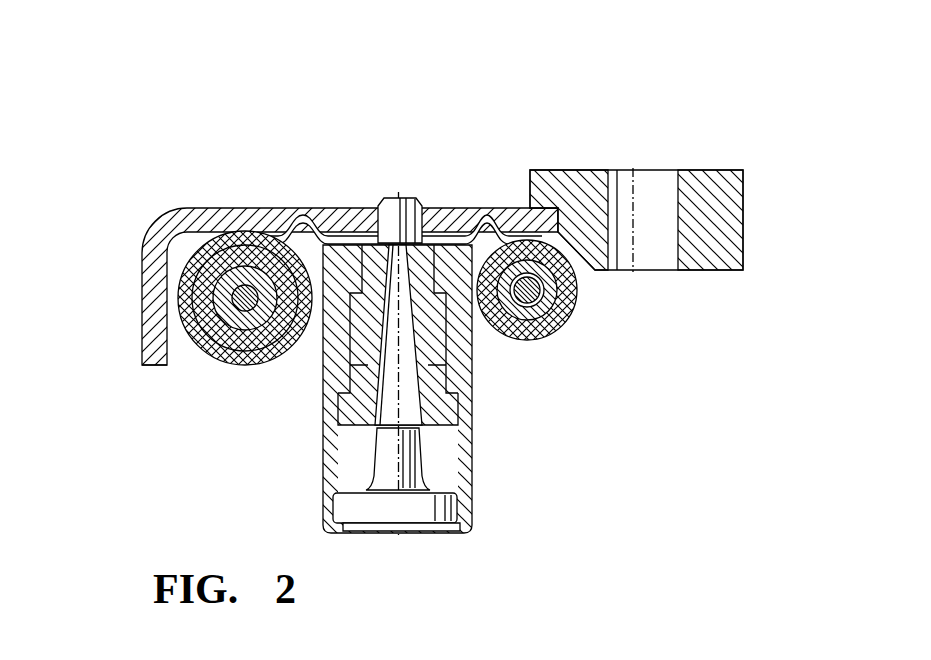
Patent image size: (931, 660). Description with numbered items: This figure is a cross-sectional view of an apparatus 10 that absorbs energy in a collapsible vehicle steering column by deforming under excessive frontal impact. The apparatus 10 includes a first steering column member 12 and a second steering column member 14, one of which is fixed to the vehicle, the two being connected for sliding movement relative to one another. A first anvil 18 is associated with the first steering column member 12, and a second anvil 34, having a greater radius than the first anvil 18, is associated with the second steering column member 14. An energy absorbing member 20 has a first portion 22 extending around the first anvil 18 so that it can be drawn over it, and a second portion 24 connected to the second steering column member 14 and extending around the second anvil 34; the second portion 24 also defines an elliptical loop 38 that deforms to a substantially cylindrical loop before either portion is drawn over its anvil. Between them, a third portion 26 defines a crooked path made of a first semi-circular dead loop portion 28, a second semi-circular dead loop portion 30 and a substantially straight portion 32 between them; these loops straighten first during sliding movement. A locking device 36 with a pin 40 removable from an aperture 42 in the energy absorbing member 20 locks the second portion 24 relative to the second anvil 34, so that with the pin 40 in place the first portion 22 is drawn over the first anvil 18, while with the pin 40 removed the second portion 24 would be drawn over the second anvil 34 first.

The apparatus 10 is at (417, 332).
The first steering column member 12 is at (720, 176).
The second steering column member 14 is at (293, 326).
The first anvil 18 is at (537, 288).
The energy absorbing member 20 is at (491, 282).
The first portion 22 is at (419, 382).
The second portion 24 is at (143, 366).
The third portion 26 is at (397, 359).
The first semi-circular dead loop portion 28 is at (476, 218).
The second semi-circular dead loop portion 30 is at (300, 212).
The substantially straight portion 32 is at (347, 218).
The second anvil 34 is at (248, 322).
The locking device 36 is at (423, 548).
The elliptical loop 38 is at (143, 468).
The pin 40 is at (418, 174).
The aperture 42 is at (418, 203).